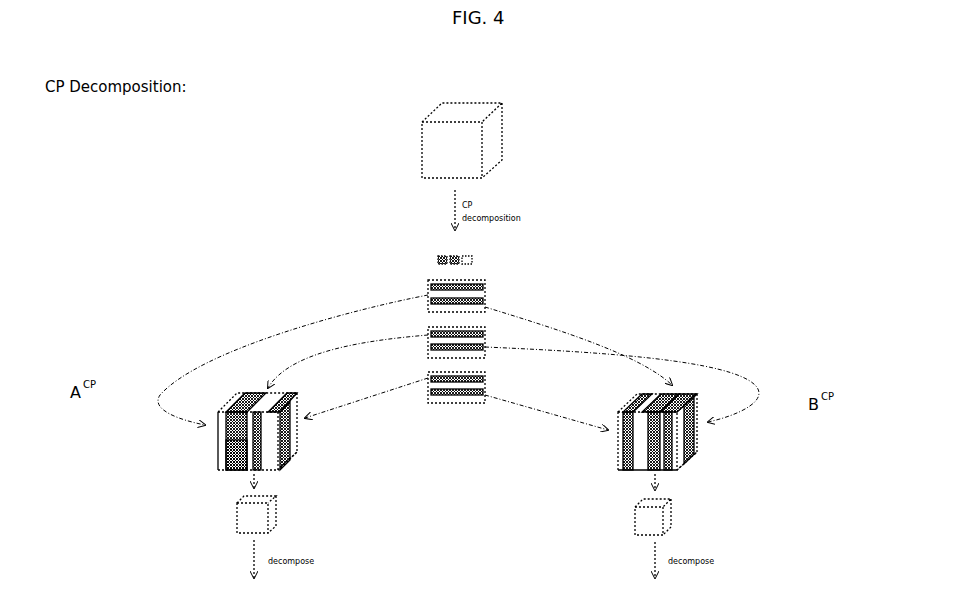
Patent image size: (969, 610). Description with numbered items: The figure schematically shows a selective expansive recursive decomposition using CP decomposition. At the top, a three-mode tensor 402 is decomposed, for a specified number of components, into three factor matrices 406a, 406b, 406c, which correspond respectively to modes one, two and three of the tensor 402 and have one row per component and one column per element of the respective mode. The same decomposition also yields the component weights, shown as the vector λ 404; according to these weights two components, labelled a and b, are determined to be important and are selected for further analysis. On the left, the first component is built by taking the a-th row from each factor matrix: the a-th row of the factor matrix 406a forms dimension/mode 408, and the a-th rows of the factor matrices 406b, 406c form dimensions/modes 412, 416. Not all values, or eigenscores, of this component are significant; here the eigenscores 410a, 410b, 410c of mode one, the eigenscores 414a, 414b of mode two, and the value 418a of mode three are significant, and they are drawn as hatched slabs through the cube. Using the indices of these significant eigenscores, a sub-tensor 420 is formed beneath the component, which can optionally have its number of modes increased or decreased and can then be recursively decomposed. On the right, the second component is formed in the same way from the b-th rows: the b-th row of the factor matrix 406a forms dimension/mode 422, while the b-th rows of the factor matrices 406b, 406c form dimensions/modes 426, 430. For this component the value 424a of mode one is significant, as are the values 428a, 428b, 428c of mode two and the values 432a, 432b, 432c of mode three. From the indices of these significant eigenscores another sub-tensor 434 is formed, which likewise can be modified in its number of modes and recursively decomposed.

The three-mode tensor 402 is at (496, 142).
The vector λ 404 is at (440, 262).
The factor matrix 406a is at (486, 296).
The factor matrix 406b is at (471, 358).
The factor matrix 406c is at (455, 405).
The dimension/mode 408 is at (218, 442).
The value/eigenscore 410a is at (228, 453).
The value/eigenscore 410b is at (238, 465).
The value/eigenscore 410c is at (260, 440).
The dimension/mode 412 is at (223, 403).
The value/eigenscore 414a is at (245, 395).
The value/eigenscore 414b is at (275, 396).
The dimension/mode 416 is at (297, 431).
The value/eigenscore 418a is at (283, 460).
The sub-tensor 420 is at (242, 528).
The dimension/mode 422 is at (680, 463).
The value/eigenscore 424a is at (690, 445).
The dimension/mode 426 is at (628, 402).
The value/eigenscore 428a is at (655, 395).
The value/eigenscore 428b is at (672, 395).
The value/eigenscore 428c is at (680, 395).
The dimension/mode 430 is at (638, 468).
The value/eigenscore 432a is at (618, 433).
The value/eigenscore 432b is at (648, 448).
The value/eigenscore 432c is at (665, 470).
The sub-tensor 434 is at (645, 528).